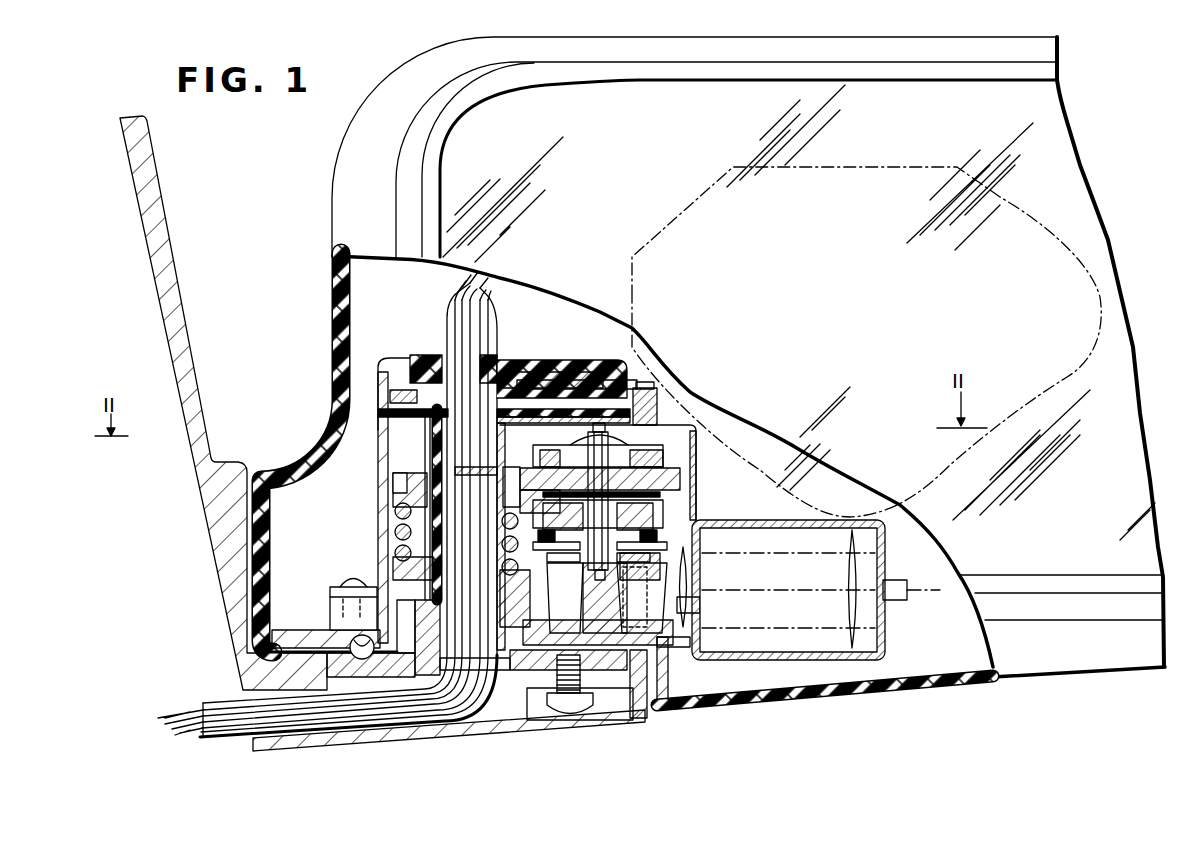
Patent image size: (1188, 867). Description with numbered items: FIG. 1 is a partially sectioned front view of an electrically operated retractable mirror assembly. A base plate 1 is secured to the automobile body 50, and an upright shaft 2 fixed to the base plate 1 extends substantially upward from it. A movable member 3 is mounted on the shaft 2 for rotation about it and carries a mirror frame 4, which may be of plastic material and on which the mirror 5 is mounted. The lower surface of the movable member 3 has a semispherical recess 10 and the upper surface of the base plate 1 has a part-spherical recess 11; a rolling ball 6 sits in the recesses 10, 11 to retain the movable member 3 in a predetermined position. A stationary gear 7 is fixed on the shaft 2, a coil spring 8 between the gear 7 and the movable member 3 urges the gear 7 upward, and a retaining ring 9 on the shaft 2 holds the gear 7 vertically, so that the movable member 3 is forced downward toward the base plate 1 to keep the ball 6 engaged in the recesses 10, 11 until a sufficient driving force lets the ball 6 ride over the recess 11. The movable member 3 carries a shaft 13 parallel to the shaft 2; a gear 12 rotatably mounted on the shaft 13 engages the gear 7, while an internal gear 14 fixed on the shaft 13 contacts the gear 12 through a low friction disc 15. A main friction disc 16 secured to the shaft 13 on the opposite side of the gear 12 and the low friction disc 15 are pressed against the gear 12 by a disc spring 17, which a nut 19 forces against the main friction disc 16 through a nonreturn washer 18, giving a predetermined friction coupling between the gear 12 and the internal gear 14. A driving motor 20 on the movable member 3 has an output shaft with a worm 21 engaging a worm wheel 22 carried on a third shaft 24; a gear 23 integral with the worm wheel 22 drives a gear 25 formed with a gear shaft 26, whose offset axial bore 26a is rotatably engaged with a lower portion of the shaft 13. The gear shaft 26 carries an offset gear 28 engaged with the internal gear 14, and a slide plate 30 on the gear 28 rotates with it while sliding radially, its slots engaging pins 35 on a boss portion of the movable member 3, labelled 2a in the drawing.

The base plate 1 is at (518, 703).
The upright shaft 2 is at (482, 660).
The housing inner wall 2a is at (425, 440).
The movable member 3 is at (494, 655).
The mirror frame 4 is at (332, 292).
The mirror 5 is at (727, 90).
The rolling ball 6 is at (364, 660).
The stationary gear 7 is at (393, 487).
The coil spring 8 is at (395, 531).
The retaining ring 9 is at (400, 463).
The semispherical recess 10 is at (352, 638).
The part-spherical recess 11 is at (380, 656).
The gear 12 is at (680, 475).
The shaft 13 is at (578, 478).
The internal gear 14 is at (665, 512).
The low friction disc 15 is at (665, 497).
The main friction disc 16 is at (665, 456).
The disc spring 17 is at (665, 447).
The nonreturn washer 18 is at (648, 425).
The nut 19 is at (632, 410).
The driving motor 20 is at (760, 622).
The worm 21 is at (702, 605).
The worm wheel 22 is at (634, 718).
The gear 23 is at (590, 603).
The third shaft 24 is at (675, 668).
The gear 25 is at (652, 558).
The gear shaft 26 is at (565, 598).
The offset axial bore 26a is at (652, 575).
The offset gear 28 is at (690, 538).
The slide plate 30 is at (502, 540).
The pins 35 is at (502, 566).
The automobile body 50 is at (185, 334).